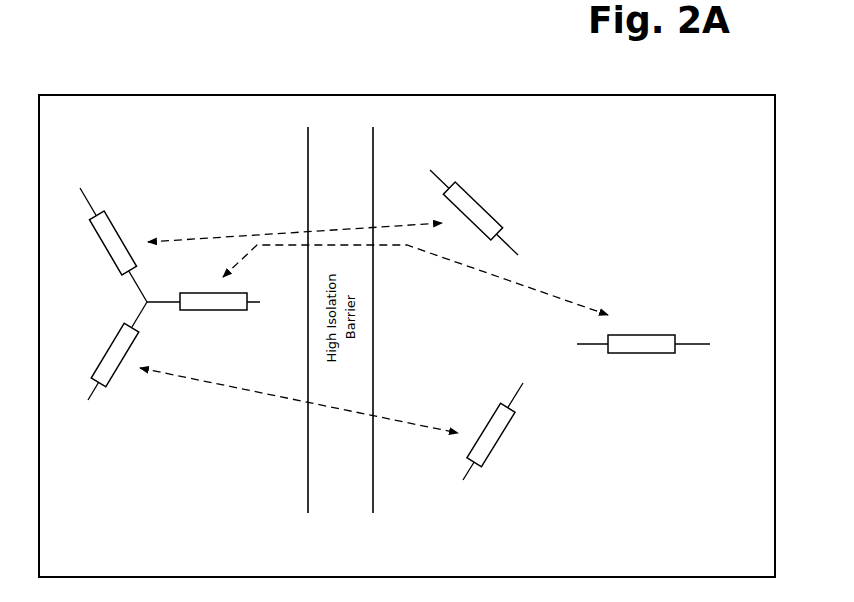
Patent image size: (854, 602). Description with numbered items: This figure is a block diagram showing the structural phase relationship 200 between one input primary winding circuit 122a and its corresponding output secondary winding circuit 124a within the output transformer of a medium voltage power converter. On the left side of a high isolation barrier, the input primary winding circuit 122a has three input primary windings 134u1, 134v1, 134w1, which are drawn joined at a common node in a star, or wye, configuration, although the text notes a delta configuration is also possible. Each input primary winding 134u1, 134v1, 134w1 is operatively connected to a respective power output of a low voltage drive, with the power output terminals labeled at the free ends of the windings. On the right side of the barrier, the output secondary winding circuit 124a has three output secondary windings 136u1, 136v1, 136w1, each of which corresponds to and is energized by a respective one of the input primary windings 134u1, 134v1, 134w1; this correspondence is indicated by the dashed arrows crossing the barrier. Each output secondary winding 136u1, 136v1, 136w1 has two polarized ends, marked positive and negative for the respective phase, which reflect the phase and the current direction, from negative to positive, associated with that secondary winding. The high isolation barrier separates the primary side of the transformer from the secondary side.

The structural phase relationship 200 is at (388, 95).
The input primary winding circuit 122a is at (210, 202).
The output secondary winding circuit 124a is at (607, 253).
The input primary winding 134u1 is at (113, 233).
The input primary winding 134v1 is at (112, 352).
The input primary winding 134w1 is at (230, 311).
The output secondary winding 136u1 is at (493, 218).
The output secondary winding 136v1 is at (497, 448).
The output secondary winding 136w1 is at (643, 335).